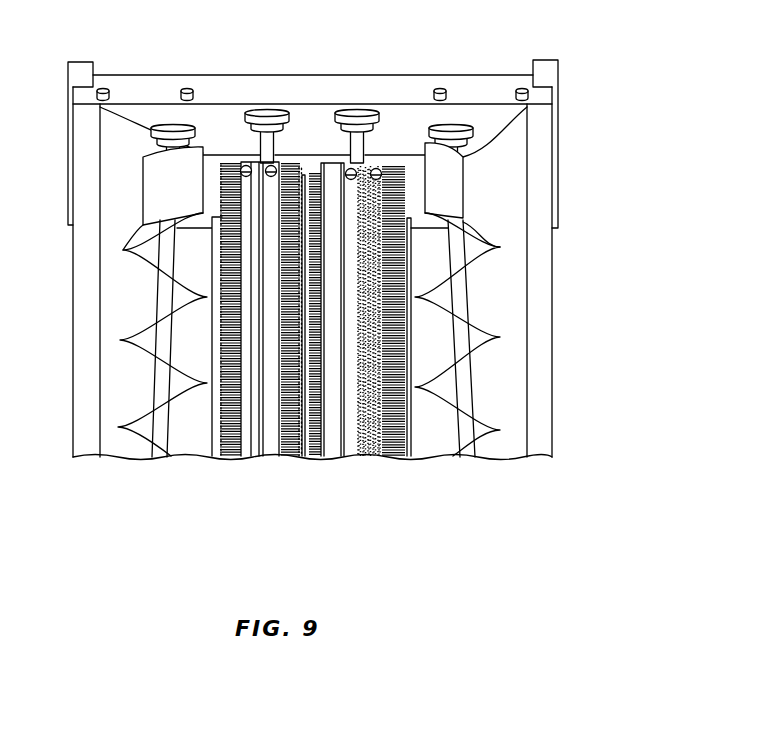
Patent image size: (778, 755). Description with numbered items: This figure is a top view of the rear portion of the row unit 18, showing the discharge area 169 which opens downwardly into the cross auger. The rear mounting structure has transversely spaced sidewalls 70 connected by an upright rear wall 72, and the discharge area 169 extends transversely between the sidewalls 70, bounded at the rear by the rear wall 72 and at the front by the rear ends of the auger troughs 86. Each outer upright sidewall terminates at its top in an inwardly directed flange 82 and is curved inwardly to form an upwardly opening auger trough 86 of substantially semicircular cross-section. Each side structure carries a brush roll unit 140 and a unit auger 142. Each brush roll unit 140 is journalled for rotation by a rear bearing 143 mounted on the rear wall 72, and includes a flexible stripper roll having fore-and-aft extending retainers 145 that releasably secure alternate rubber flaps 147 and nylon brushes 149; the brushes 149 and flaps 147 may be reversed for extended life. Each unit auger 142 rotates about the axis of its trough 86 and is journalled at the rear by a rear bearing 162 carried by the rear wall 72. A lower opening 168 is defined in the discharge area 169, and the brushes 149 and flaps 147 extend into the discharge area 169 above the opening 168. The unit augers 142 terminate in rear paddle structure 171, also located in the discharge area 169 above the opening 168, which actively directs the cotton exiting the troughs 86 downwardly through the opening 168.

The cleaning apparatus 18 is at (611, 42).
The sidewalls 70 is at (68, 163).
The rear wall 72 is at (309, 106).
The inwardly directed flange 82 is at (73, 269).
The auger trough 86 is at (115, 380).
The brush roll unit 140 is at (233, 487).
The unit auger 142 is at (128, 450).
The rear bearing 143 is at (268, 111).
The retainers 145 is at (377, 168).
The rubber flaps 147 is at (258, 457).
The nylon brushes 149 is at (238, 457).
The rear bearing 162 is at (167, 124).
The lower opening 168 is at (212, 166).
The discharge area 169 is at (408, 122).
The rear paddle structure 171 is at (157, 175).